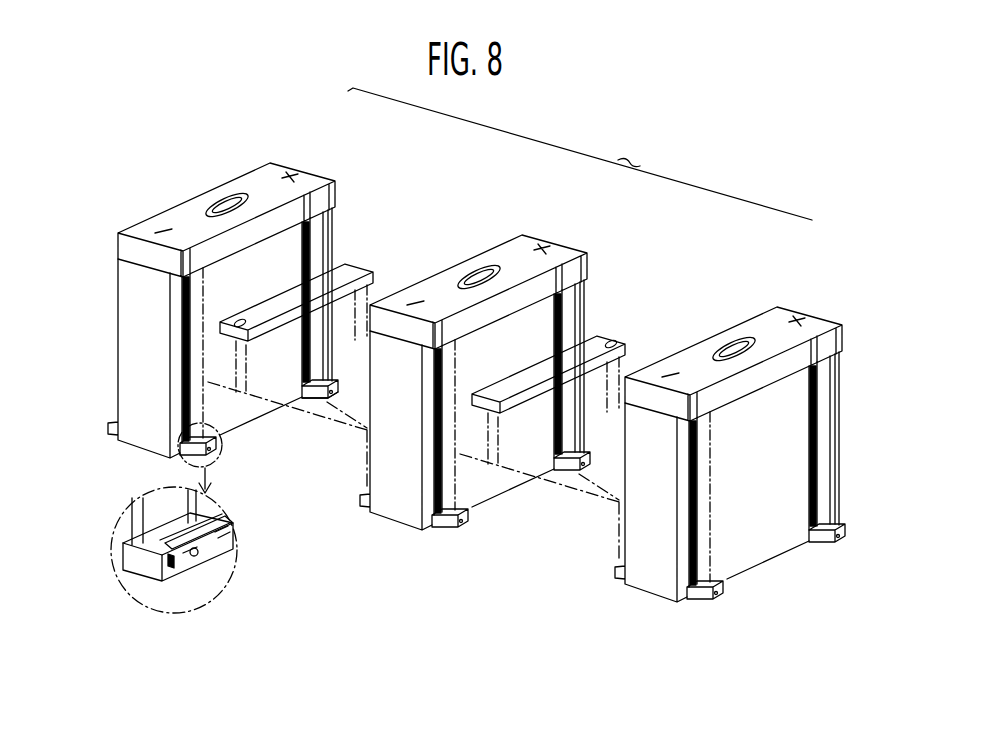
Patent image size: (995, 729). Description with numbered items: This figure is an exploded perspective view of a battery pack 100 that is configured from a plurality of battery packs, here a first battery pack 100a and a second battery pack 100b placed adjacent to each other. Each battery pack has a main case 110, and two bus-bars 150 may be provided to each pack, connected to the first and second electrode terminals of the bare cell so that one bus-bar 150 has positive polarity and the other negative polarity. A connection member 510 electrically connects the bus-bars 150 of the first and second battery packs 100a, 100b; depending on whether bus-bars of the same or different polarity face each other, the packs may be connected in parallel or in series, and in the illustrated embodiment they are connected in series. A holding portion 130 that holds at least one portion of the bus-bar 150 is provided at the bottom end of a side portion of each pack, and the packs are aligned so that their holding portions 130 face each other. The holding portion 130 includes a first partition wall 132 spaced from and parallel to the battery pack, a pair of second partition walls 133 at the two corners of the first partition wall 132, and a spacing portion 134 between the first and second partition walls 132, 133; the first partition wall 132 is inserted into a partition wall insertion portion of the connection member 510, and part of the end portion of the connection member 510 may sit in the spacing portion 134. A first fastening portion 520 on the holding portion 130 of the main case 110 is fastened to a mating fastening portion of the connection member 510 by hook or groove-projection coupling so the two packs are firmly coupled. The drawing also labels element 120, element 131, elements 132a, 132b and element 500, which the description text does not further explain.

The battery pack 100 is at (580, 154).
The first battery pack 100a is at (463, 350).
The second battery pack 100b is at (570, 230).
The main case 110 is at (128, 322).
The cover 120 is at (168, 222).
The holding portion 130 is at (306, 402).
The fixing body 131 is at (176, 566).
The first partition wall 132 is at (172, 582).
The first groove portion 132a is at (225, 540).
The second groove portion 132b is at (173, 562).
The second partition walls 133 is at (202, 544).
The spacing portion 134 is at (190, 556).
The bus-bar 150 is at (195, 360).
The rack 500 is at (676, 152).
The connection member 510 is at (372, 262).
The first fastening portion 520 is at (331, 396).